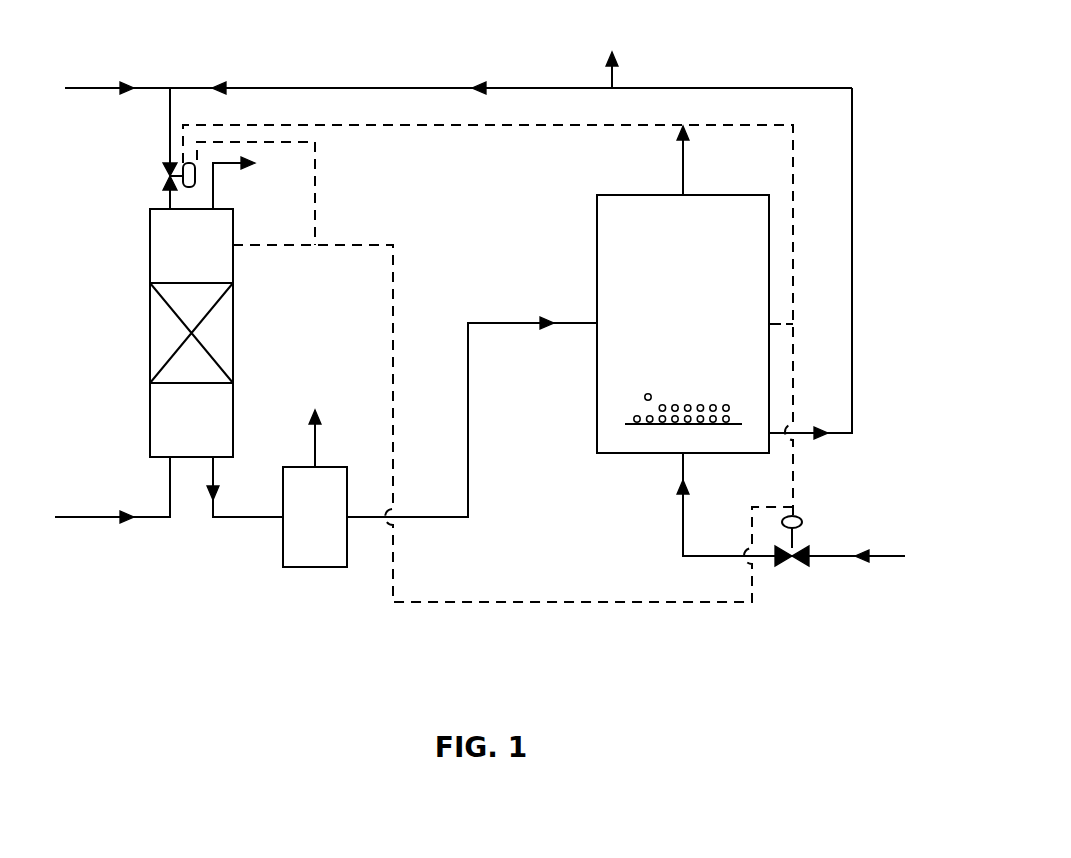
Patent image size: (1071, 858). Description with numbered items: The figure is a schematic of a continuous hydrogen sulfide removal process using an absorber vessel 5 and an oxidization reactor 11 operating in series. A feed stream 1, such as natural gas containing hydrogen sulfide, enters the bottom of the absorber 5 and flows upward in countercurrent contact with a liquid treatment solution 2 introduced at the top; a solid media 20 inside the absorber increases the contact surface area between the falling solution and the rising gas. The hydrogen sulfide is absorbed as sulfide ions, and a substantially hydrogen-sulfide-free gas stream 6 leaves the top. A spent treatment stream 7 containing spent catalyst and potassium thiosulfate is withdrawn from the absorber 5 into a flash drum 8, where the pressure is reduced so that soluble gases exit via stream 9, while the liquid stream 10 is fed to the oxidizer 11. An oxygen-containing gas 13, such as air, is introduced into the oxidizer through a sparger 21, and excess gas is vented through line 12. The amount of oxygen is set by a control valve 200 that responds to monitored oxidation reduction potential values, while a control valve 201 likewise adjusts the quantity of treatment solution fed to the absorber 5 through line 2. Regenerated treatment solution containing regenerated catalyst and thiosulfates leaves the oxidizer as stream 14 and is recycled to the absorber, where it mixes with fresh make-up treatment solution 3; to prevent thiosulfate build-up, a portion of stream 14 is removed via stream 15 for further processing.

The feed stream 1 is at (92, 517).
The liquid treatment solution 2 is at (168, 128).
The make-up treatment solution 3 is at (97, 88).
The absorber vessel 5 is at (184, 262).
The H2S-free gas stream 6 is at (222, 165).
The spent treatment stream 7 is at (232, 520).
The flash drum 8 is at (307, 531).
The off-gas stream 9 is at (315, 445).
The liquid stream 10 is at (468, 447).
The oxidization reactor 11 is at (667, 291).
The excess gas line 12 is at (683, 167).
The oxygen-containing gas 13 is at (683, 512).
The regenerated liquid stream 14 is at (852, 365).
The thiosulfate purge stream 15 is at (612, 75).
The solid media 20 is at (222, 337).
The sparger 21 is at (675, 405).
The control valve 200 is at (802, 548).
The control valve 201 is at (163, 182).